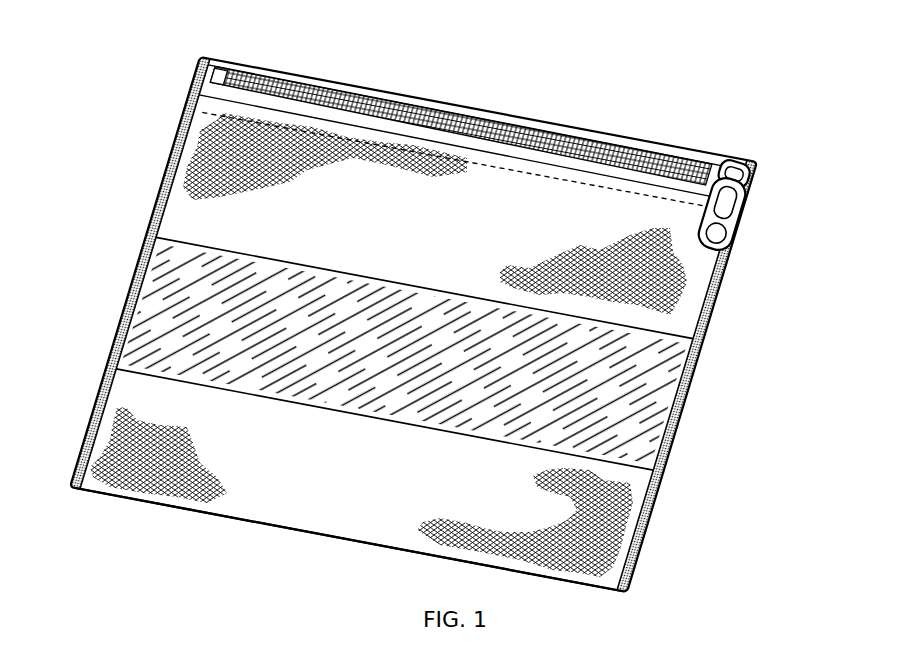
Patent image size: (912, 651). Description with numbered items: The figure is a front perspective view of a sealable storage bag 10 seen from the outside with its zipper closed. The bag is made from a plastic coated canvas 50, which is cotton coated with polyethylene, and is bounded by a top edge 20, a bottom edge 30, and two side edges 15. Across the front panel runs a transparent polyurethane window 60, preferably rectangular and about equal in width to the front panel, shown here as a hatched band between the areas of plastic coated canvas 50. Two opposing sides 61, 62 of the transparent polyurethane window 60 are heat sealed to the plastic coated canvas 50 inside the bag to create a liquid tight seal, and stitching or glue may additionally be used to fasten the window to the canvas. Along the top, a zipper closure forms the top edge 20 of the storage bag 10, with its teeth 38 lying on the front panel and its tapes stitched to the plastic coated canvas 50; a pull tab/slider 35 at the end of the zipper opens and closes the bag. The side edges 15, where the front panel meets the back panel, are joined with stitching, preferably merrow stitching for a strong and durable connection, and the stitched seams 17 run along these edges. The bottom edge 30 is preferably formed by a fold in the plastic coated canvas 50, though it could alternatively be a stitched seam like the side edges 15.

The storage bag 10 is at (690, 108).
The side edges 15 is at (134, 248).
The side seam 17 is at (116, 348).
The top edge 20 is at (405, 88).
The bottom edge 30 is at (328, 552).
The pull tab/slider 35 is at (730, 212).
The teeth 38 is at (537, 133).
The plastic coated canvas 50 is at (388, 345).
The transparent polyurethane window 60 is at (404, 354).
The opposing side of the transparent polyurethane window 61 is at (385, 286).
The opposing side of the transparent polyurethane window 62 is at (189, 382).